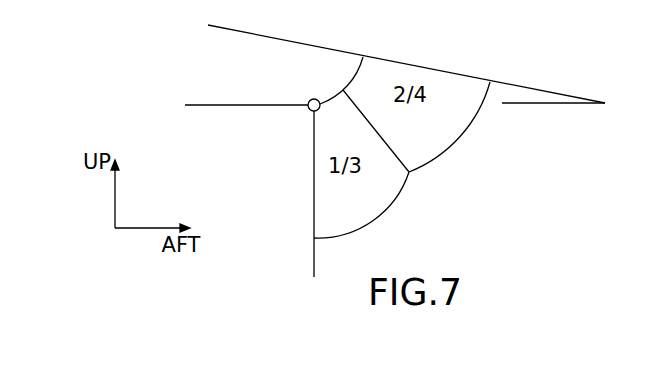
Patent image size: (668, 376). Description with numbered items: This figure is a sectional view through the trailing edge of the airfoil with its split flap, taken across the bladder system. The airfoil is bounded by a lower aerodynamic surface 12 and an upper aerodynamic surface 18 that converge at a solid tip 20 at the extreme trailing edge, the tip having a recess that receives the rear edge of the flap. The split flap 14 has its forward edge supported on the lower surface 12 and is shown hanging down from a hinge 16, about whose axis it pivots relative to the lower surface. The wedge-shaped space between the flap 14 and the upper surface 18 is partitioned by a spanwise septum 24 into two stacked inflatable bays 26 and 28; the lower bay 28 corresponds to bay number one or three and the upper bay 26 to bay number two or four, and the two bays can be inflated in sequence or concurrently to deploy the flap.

The lower aerodynamic surface 12 is at (233, 106).
The split flap 14 is at (313, 238).
The hinge 16 is at (307, 108).
The upper aerodynamic surface 18 is at (332, 47).
The solid tip 20 is at (568, 94).
The spanwise septum 24 is at (395, 152).
The inflatable bay 26 is at (468, 127).
The inflatable bay 28 is at (378, 220).